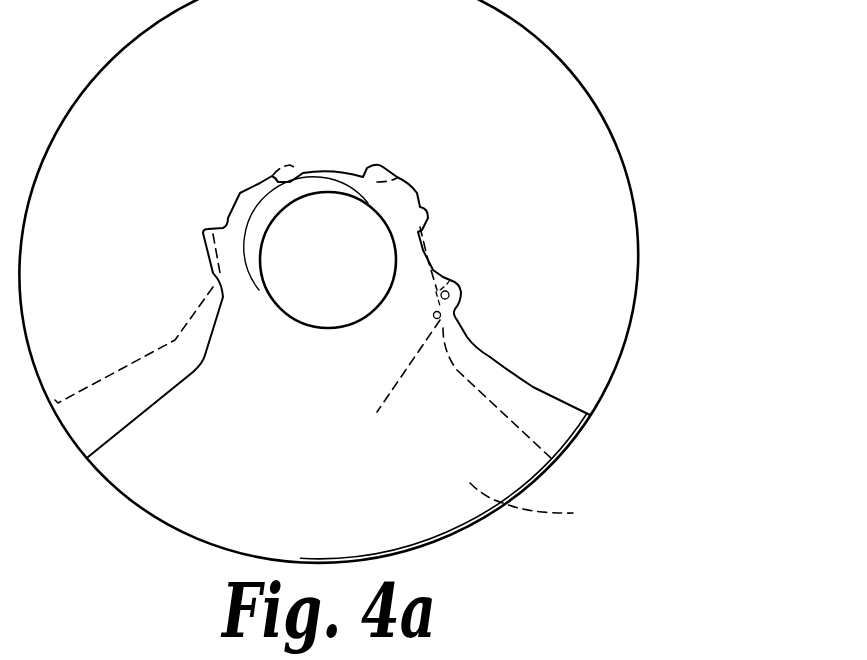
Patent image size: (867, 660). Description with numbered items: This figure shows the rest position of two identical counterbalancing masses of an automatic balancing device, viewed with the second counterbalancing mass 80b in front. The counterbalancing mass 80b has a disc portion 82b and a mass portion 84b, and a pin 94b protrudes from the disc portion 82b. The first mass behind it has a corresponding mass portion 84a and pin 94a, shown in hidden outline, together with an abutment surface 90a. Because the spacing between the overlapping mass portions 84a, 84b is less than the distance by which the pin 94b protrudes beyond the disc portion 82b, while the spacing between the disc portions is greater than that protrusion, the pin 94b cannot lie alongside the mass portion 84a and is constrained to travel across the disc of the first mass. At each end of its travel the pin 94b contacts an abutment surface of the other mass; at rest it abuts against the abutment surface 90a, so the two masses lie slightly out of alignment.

The counterbalancing mass 80b is at (567, 132).
The disc portion 82b is at (637, 278).
The mass portion 84a is at (573, 513).
The mass portion 84b is at (563, 420).
The abutment surface 90a is at (467, 293).
The pin 94a is at (457, 386).
The pin 94b is at (450, 280).